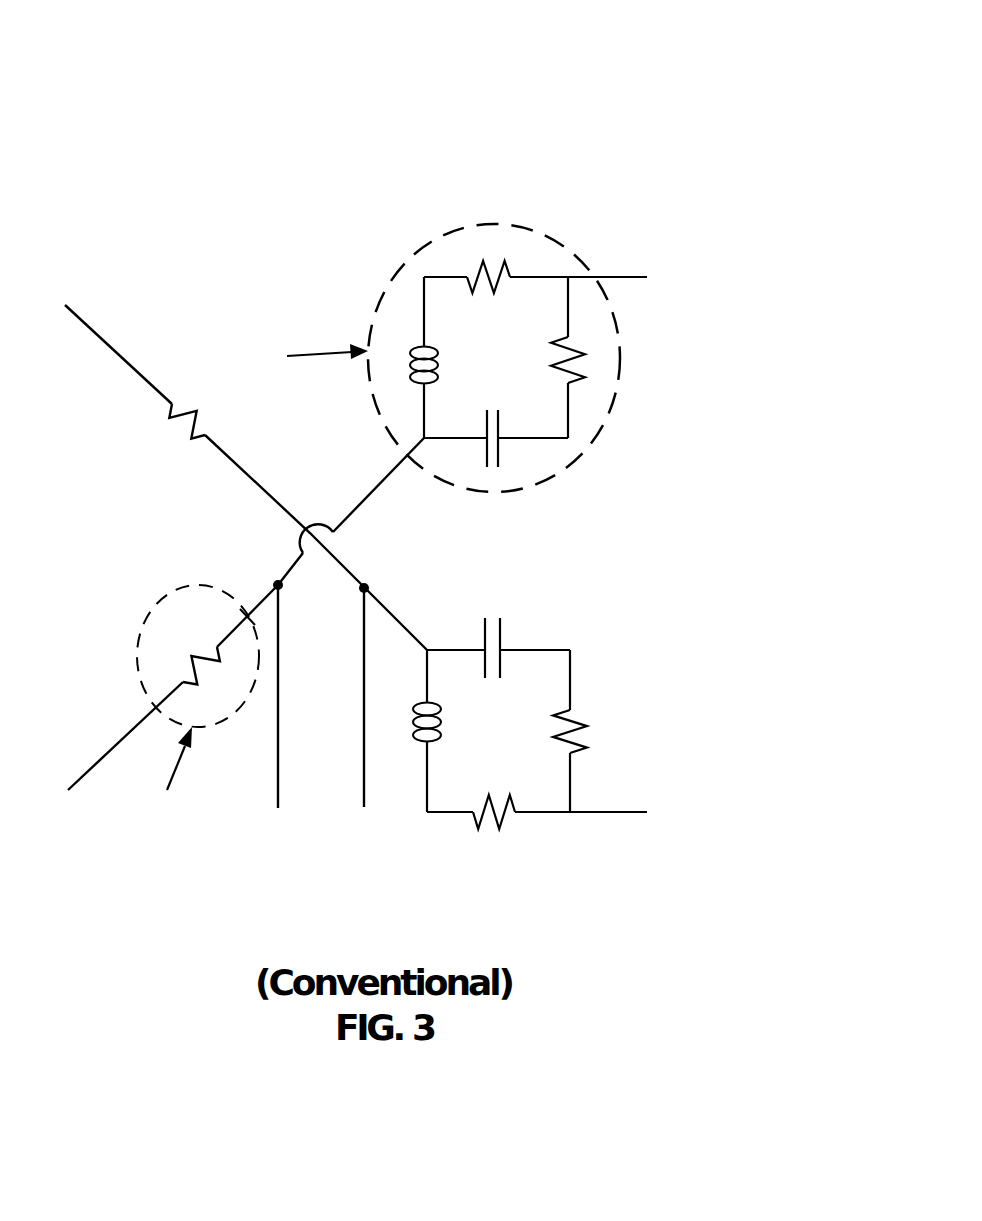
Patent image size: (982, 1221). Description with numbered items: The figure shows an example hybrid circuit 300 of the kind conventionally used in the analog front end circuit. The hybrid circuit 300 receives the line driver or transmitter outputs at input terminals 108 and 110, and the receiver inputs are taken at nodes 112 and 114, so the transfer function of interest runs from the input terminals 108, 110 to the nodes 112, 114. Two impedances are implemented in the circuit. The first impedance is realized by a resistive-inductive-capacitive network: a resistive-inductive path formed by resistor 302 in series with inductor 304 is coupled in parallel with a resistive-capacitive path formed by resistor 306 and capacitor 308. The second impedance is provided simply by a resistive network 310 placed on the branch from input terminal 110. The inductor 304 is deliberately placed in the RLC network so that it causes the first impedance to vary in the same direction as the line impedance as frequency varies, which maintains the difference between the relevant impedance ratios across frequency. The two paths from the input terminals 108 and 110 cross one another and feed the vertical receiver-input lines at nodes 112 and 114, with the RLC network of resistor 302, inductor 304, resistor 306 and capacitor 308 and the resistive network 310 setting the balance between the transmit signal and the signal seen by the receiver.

The hybrid circuit 300 is at (775, 35).
The resistor 302 is at (503, 262).
The inductor 304 is at (410, 388).
The resistor 306 is at (613, 392).
The capacitor 308 is at (503, 455).
The resistive network 310 is at (188, 658).
The input terminal 108 is at (65, 305).
The input terminal 110 is at (70, 789).
The node 112 is at (276, 781).
The node 114 is at (365, 765).